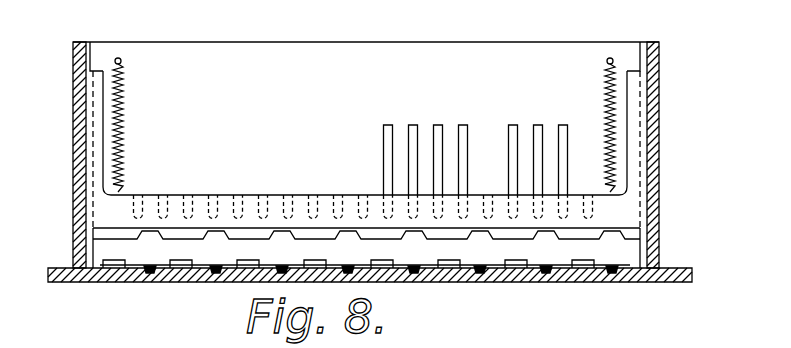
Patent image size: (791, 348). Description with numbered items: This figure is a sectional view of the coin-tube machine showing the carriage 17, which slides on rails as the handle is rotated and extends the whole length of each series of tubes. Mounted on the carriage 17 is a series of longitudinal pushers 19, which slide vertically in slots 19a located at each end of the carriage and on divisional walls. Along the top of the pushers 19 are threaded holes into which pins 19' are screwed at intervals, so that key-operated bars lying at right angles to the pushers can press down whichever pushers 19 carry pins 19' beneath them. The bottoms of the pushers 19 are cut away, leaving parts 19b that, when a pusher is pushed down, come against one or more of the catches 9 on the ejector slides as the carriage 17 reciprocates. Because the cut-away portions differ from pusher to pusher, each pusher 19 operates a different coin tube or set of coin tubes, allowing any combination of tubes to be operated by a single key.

The catches 9 is at (113, 270).
The carriage 17 is at (365, 126).
The longitudinal pushers 19 is at (363, 190).
The pins 19' is at (476, 138).
The slots 19a is at (98, 52).
The parts 19b is at (526, 232).